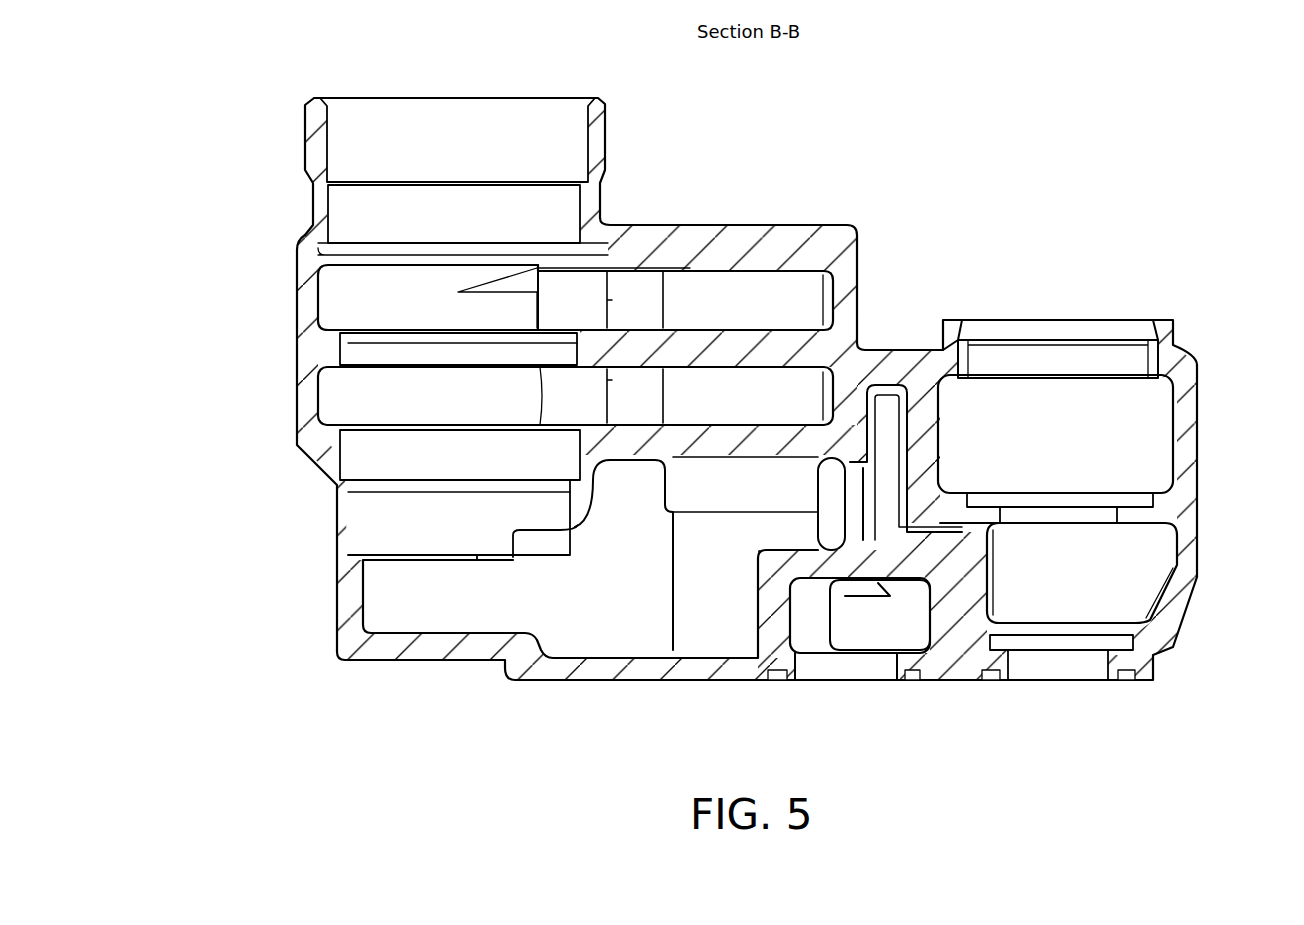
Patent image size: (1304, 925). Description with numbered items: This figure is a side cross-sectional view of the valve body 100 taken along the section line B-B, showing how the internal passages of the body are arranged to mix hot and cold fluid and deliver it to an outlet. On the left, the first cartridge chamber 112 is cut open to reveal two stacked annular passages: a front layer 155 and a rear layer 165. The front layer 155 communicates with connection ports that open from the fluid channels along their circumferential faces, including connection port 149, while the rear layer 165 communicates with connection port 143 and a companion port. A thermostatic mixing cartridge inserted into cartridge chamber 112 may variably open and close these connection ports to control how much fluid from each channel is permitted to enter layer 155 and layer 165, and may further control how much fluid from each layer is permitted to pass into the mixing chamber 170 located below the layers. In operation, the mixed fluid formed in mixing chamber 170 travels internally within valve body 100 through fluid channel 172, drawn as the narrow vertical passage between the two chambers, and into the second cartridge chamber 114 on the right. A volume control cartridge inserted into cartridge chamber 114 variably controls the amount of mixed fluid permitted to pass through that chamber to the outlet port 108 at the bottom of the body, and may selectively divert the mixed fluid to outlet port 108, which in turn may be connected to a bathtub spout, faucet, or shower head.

The valve body 100 is at (150, 147).
The outlet port 108 is at (845, 685).
The first cartridge chamber 112 is at (230, 95).
The second cartridge chamber 114 is at (1211, 330).
The first connection port 143 is at (640, 405).
The second connection port 149 is at (632, 295).
The front layer 155 is at (333, 290).
The rear layer 165 is at (333, 385).
The mixing chamber 170 is at (500, 605).
The fluid channel 172 is at (887, 405).